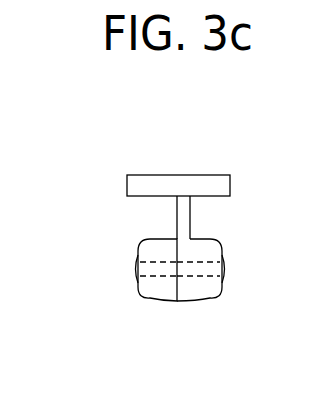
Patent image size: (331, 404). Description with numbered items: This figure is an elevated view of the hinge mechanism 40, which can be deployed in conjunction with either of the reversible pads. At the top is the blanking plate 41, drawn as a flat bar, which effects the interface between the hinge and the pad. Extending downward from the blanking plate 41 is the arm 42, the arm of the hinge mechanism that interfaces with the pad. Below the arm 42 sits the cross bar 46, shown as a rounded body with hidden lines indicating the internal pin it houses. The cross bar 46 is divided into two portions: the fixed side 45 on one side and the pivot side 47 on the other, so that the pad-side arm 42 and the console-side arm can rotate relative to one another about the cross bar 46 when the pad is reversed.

The hinge mechanism 40 is at (100, 200).
The blanking plate 41 is at (202, 185).
The arm 42 is at (183, 224).
The fixed side 45 is at (203, 290).
The cross bar 46 is at (136, 282).
The pivot side 47 is at (157, 290).